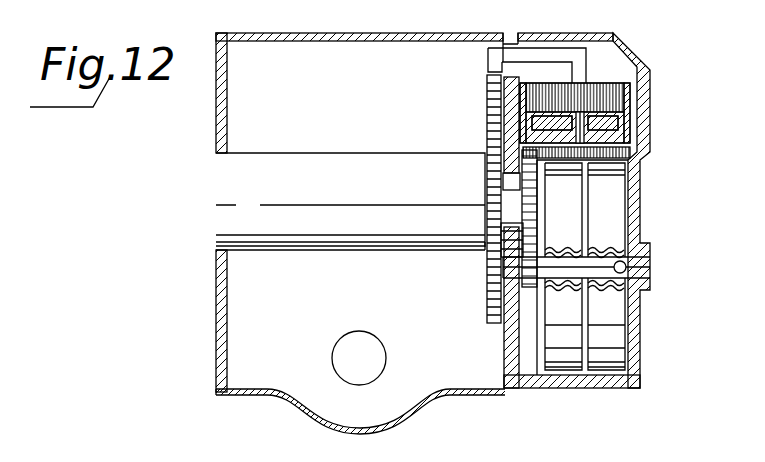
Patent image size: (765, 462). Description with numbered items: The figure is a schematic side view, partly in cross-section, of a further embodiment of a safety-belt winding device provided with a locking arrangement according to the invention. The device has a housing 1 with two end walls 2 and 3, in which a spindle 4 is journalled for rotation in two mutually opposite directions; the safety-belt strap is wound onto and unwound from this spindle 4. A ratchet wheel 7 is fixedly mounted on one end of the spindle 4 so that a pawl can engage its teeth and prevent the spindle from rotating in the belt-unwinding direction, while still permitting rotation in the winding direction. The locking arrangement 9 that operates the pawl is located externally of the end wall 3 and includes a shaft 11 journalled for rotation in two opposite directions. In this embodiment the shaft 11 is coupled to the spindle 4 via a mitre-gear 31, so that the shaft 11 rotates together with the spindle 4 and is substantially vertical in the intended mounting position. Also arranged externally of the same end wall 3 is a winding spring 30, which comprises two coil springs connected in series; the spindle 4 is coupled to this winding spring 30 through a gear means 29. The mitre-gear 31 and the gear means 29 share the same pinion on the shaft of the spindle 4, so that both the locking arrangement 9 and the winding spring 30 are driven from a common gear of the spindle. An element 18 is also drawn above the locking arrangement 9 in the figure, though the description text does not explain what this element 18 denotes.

The housing 1 is at (268, 382).
The end wall 2 is at (216, 328).
The end wall 3 is at (510, 388).
The spindle 4 is at (303, 244).
The ratchet wheel 7 is at (488, 108).
The locking arrangement 9 is at (637, 106).
The shaft 11 is at (585, 135).
The contact strip 18 is at (547, 63).
The gear means 29 is at (501, 258).
The winding spring 30 is at (607, 332).
The mitre-gear 31 is at (490, 142).